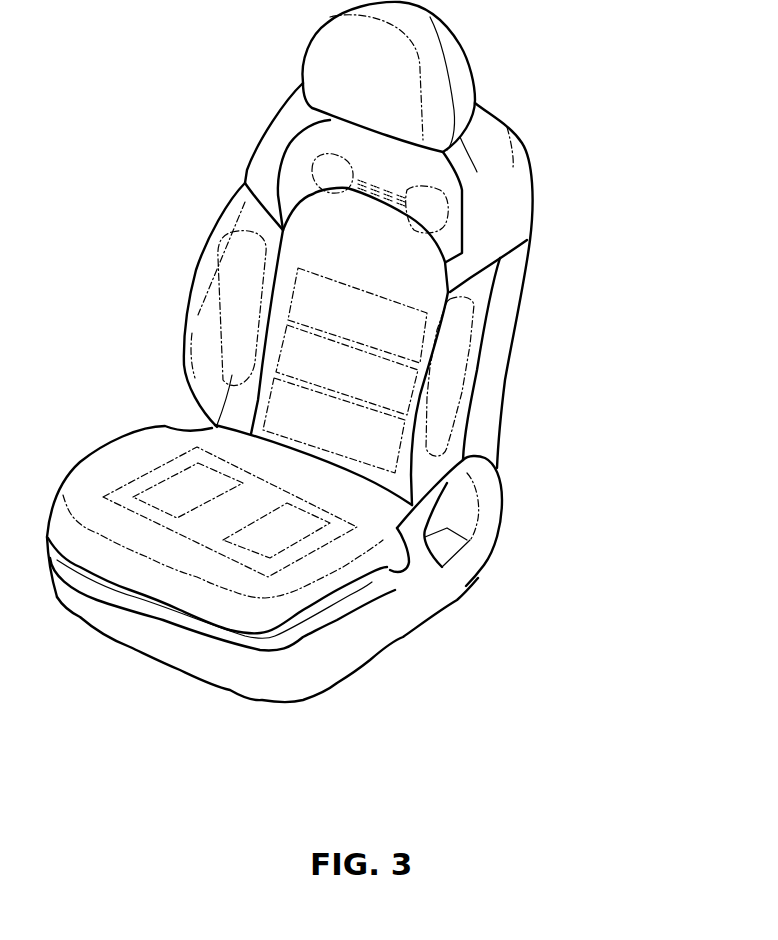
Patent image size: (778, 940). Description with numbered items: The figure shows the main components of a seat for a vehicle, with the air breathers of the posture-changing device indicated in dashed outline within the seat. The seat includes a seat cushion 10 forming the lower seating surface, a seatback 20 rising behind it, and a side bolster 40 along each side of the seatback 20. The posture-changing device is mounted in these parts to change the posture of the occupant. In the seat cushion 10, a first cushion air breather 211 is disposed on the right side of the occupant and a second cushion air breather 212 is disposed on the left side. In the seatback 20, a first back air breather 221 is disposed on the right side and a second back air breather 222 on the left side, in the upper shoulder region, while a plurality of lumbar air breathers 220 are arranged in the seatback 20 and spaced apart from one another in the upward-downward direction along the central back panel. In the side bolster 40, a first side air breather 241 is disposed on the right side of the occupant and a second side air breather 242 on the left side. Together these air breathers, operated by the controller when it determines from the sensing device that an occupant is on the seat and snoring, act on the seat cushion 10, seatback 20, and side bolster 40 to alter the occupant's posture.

The seat cushion 10 is at (400, 603).
The seatback 20 is at (497, 340).
The side bolster 40 is at (250, 213).
The first cushion air breather 211 is at (180, 490).
The second cushion air breather 212 is at (257, 537).
The lumbar air breathers 220 is at (367, 442).
The first back air breather 221 is at (330, 177).
The second back air breather 222 is at (427, 212).
The first side air breather 241 is at (233, 320).
The second side air breather 242 is at (380, 388).